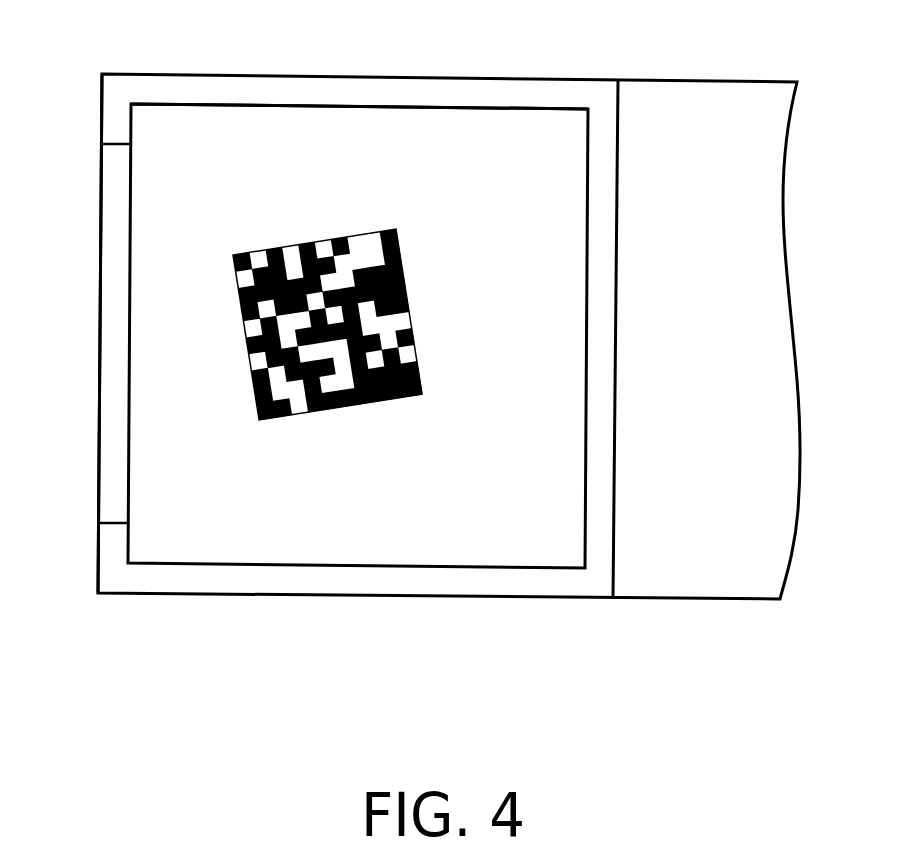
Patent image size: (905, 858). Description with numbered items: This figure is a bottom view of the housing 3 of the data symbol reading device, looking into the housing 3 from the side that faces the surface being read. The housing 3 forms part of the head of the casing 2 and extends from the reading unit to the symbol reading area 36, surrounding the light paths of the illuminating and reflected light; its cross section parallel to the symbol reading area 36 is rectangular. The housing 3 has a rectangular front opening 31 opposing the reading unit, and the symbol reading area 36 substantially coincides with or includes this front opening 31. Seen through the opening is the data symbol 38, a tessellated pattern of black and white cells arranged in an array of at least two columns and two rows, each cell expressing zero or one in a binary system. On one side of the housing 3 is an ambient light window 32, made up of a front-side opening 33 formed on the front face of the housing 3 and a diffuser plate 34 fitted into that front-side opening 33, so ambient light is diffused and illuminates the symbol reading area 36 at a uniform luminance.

The casing 2 is at (730, 98).
The housing 3 is at (300, 593).
The front opening 31 is at (485, 543).
The ambient light window 32 is at (99, 368).
The front-side opening 33 is at (115, 523).
The diffuser plate 34 is at (112, 239).
The symbol reading area 36 is at (422, 128).
The data symbol 38 is at (250, 353).